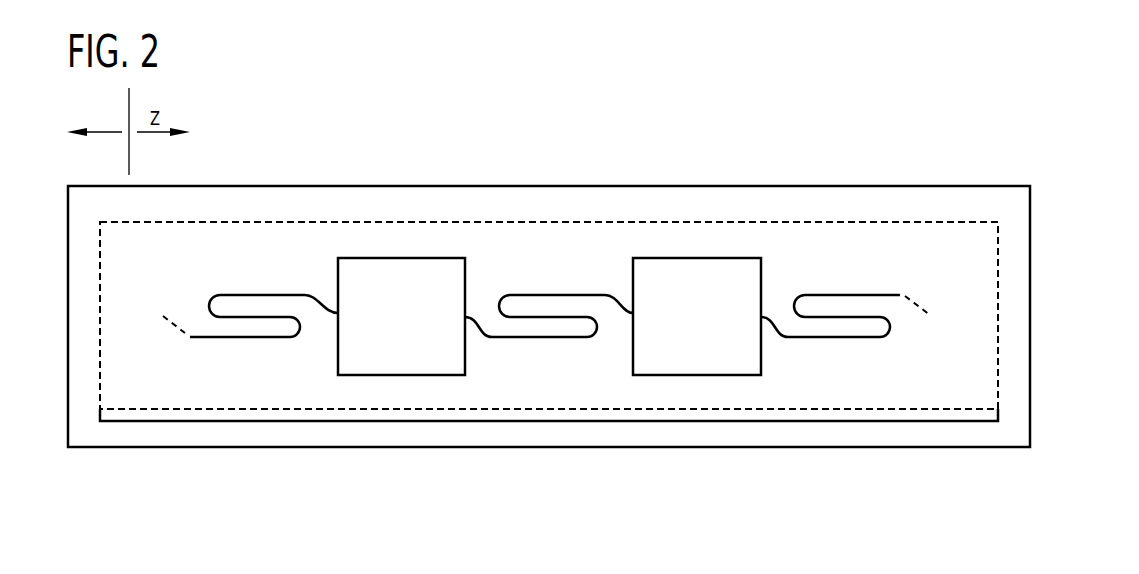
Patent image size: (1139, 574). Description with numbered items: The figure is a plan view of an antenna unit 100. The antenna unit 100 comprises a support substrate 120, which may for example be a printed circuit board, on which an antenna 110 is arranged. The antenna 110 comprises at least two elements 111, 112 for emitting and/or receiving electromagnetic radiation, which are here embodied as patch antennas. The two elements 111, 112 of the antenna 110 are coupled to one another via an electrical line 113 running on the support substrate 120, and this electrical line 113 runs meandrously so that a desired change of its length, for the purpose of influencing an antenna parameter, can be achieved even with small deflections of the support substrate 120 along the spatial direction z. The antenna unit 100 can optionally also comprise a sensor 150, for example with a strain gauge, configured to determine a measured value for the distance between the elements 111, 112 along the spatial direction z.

The antenna unit 100 is at (1105, 329).
The antenna 110 is at (198, 411).
The element 111 is at (345, 273).
The element 112 is at (643, 274).
The electrical line 113 is at (547, 290).
The support substrate 120 is at (926, 185).
The sensor 150 is at (999, 412).